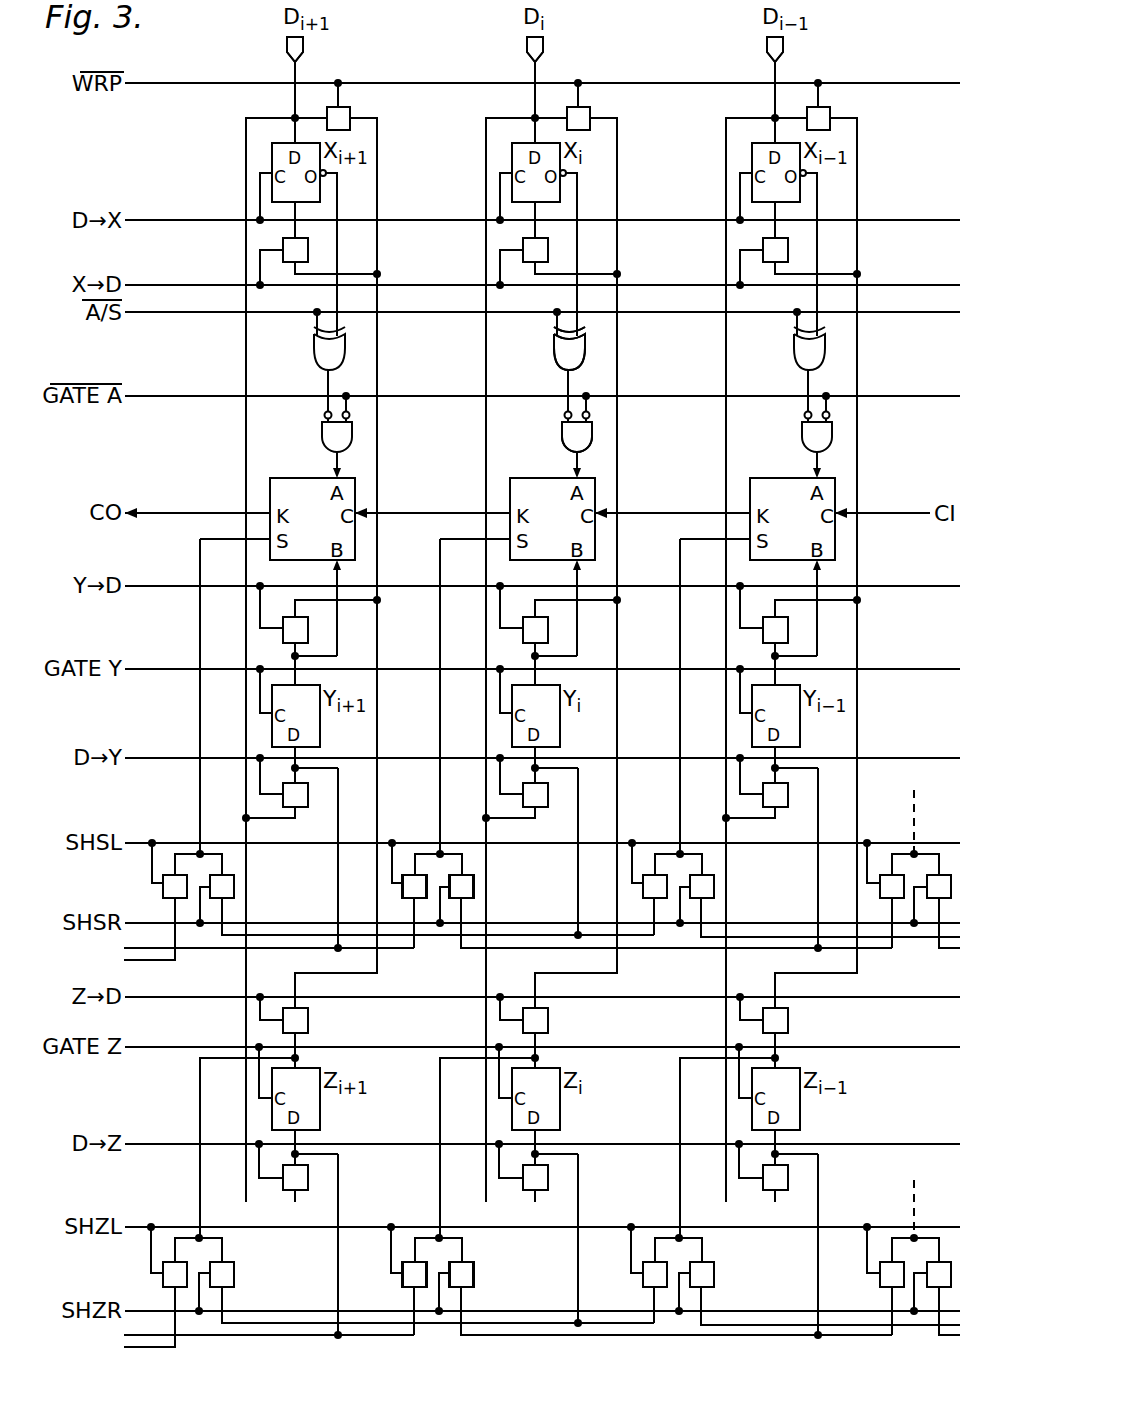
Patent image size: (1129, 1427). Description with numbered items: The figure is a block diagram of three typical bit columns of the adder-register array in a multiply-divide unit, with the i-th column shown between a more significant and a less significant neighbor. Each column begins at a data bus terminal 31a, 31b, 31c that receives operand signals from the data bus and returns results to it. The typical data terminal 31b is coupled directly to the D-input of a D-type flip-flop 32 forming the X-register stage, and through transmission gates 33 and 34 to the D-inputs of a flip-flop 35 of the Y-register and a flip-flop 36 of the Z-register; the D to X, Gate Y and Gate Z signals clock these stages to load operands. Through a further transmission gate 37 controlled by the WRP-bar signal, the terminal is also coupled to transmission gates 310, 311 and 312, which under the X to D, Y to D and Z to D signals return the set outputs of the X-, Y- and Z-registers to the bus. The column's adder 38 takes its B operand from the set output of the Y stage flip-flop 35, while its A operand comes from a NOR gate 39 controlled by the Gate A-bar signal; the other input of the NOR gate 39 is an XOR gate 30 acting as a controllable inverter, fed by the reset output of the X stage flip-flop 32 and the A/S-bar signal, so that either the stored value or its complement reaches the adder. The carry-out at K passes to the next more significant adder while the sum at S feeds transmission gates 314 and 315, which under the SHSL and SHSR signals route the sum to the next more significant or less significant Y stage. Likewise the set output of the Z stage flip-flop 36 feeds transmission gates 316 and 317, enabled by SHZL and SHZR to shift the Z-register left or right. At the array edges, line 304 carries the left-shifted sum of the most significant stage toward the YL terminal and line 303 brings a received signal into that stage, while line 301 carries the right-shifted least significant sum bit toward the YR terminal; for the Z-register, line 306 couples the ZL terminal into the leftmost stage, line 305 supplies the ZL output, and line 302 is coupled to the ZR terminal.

The data bus terminal 31a is at (783, 46).
The data bus terminal 31b is at (543, 46).
The data bus terminal 31c is at (303, 46).
The transmission gate 37 is at (590, 114).
The D-type flip-flop 32 is at (512, 170).
The transmission gate 310 is at (523, 248).
The XOR gate 30 is at (554, 350).
The NOR gate 39 is at (562, 432).
The adder 38 is at (534, 478).
The transmission gate 311 is at (523, 634).
The flip-flop 35 is at (560, 740).
The transmission gate 33 is at (548, 808).
The transmission gate 314 is at (412, 875).
The transmission gate 315 is at (473, 890).
The line 304 is at (175, 960).
The line 303 is at (208, 950).
The line 301 is at (912, 950).
The transmission gate 312 is at (548, 1020).
The flip-flop 36 is at (560, 1110).
The transmission gate 34 is at (548, 1180).
The transmission gate 316 is at (402, 1280).
The transmission gate 317 is at (473, 1277).
The line 305 is at (175, 1347).
The line 306 is at (262, 1340).
The line 302 is at (912, 1337).